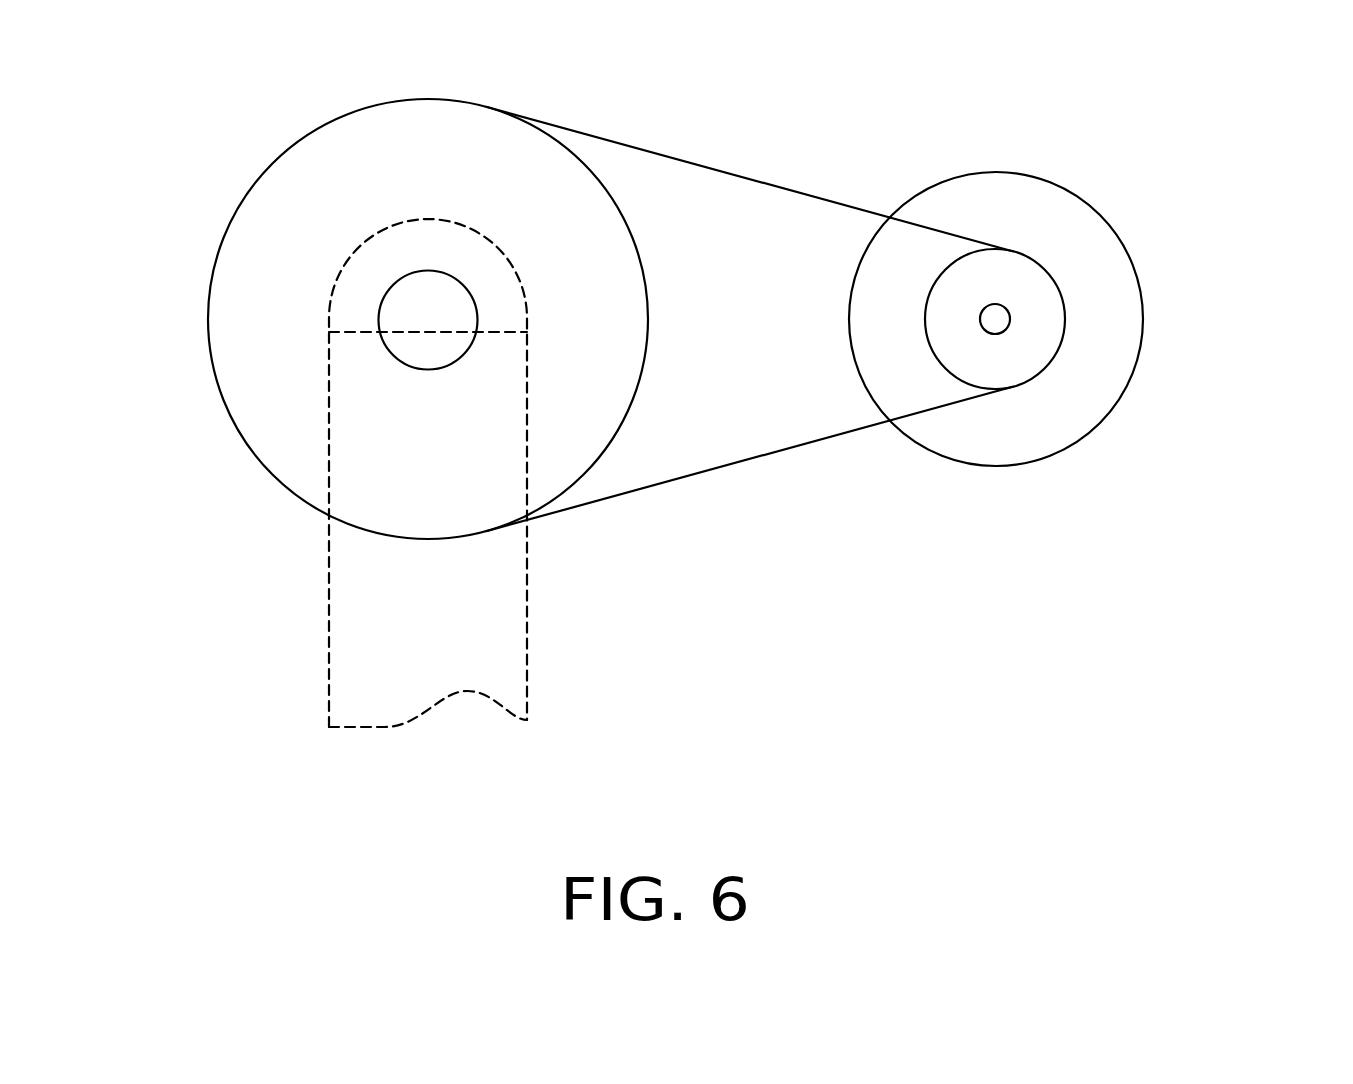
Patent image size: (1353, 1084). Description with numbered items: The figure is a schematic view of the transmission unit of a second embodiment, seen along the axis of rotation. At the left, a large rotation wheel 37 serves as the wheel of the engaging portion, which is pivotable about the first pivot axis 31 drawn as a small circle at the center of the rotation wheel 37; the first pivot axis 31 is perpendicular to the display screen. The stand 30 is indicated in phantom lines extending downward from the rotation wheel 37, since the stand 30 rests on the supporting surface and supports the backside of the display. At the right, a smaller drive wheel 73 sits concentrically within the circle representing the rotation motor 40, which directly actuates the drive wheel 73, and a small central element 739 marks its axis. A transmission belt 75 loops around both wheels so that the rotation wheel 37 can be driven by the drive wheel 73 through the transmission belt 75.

The stand 30 is at (485, 620).
The first pivot axis 31 is at (438, 303).
The rotation wheel 37 is at (255, 313).
The rotation motor 40 is at (1073, 238).
The drive wheel 73 is at (1038, 311).
The transmission belt 75 is at (768, 453).
The pulley axle 739 is at (1003, 323).